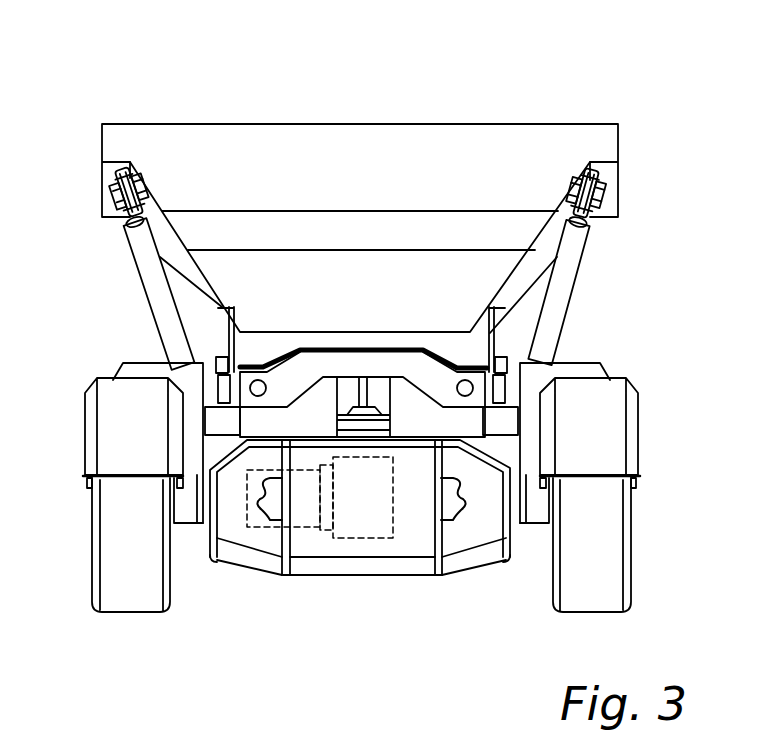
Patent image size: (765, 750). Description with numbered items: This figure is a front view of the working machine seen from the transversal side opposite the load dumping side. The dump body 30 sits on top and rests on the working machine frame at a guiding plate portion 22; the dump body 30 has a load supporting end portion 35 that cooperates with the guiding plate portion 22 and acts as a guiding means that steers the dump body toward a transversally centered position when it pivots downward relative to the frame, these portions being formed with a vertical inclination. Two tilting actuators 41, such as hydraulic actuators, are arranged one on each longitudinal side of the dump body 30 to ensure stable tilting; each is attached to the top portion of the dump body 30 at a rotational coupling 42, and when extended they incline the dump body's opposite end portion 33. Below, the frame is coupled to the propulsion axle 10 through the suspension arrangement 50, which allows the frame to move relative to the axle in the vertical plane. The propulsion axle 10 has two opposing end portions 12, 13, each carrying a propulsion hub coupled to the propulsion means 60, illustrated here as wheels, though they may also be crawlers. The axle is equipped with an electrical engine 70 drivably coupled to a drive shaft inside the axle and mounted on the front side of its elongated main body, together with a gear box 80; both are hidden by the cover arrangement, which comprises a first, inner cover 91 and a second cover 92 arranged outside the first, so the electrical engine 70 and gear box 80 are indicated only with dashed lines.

The propulsion axle 10 is at (535, 512).
The end portion of the propulsion axle 12 is at (188, 552).
The end portion of the propulsion axle 13 is at (540, 554).
The guiding plate portion 22 is at (262, 356).
The dump body 30 is at (515, 122).
The opposite end portion of the dump body 33 is at (130, 137).
The load supporting end portion 35 is at (490, 332).
The tilting actuator 41 is at (150, 277).
The rotational coupling 42 is at (120, 172).
The suspension arrangement 50 is at (427, 425).
The propulsion means 60 is at (110, 598).
The electrical engine 70 is at (303, 505).
The gear box 80 is at (370, 510).
The first cover 91 is at (412, 500).
The second cover 92 is at (327, 572).